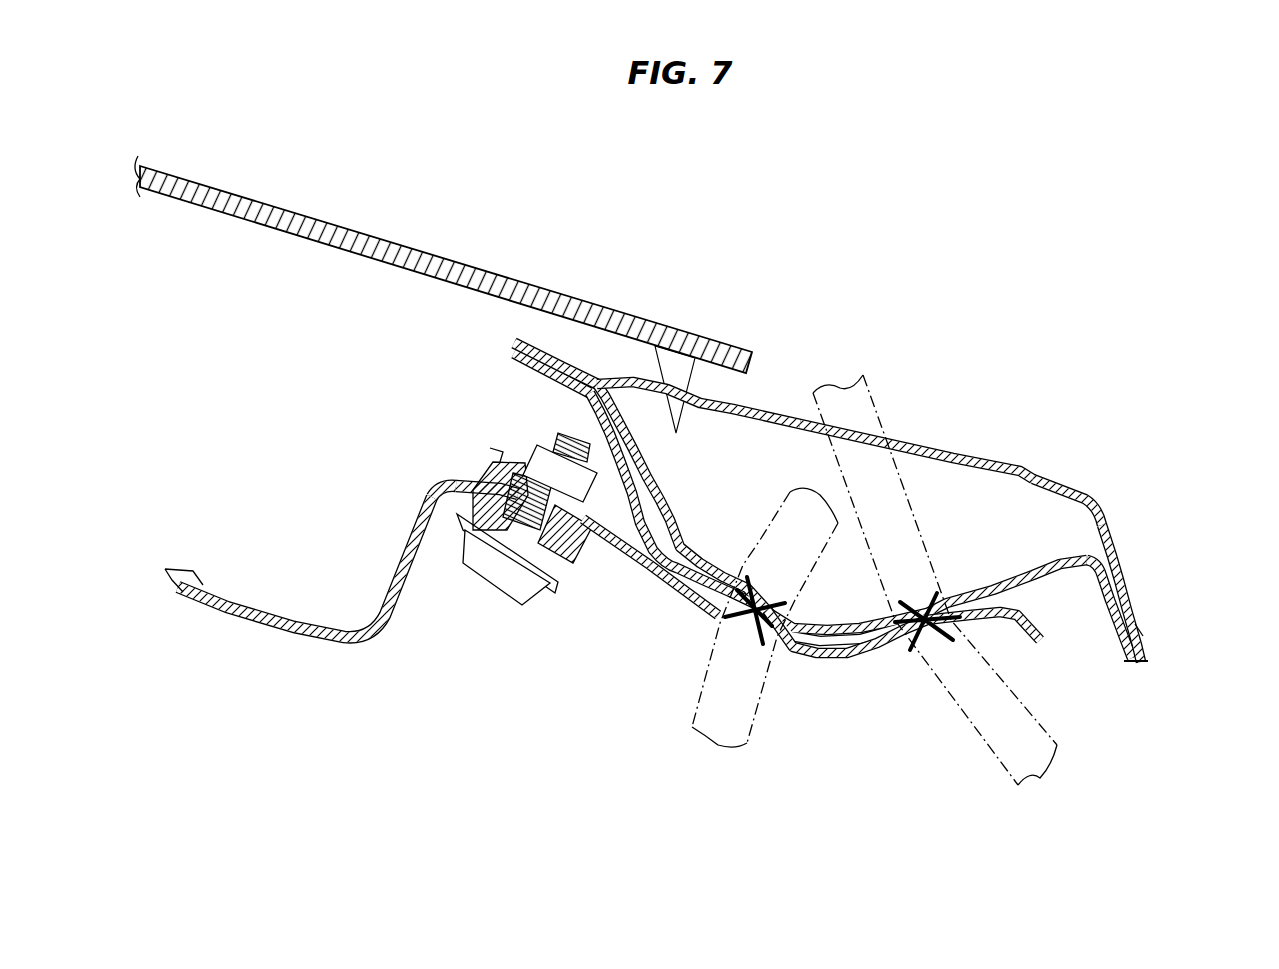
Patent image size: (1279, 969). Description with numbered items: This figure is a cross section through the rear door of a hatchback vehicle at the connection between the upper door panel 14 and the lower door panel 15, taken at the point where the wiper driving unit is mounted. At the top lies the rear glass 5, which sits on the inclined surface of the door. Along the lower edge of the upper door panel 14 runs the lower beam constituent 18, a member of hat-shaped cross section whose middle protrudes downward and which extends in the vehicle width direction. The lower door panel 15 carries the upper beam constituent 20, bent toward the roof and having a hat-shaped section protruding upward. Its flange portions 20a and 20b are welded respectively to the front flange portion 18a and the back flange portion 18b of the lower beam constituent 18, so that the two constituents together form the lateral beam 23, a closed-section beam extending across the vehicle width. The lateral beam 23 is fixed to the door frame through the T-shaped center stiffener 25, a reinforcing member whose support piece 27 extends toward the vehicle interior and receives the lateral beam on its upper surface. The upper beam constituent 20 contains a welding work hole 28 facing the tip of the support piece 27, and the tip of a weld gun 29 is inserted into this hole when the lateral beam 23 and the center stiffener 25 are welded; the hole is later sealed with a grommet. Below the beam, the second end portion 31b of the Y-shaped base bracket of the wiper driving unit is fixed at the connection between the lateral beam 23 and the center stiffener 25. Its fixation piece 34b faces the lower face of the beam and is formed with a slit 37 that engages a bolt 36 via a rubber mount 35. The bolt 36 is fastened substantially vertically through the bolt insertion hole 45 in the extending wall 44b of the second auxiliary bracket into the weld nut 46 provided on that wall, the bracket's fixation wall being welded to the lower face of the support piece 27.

The rear glass 5 is at (440, 258).
The upper door panel 14 is at (1122, 675).
The lower door panel 15 is at (1160, 630).
The lower beam constituent 18 is at (1037, 590).
The front flange portion 18a is at (556, 362).
The back flange portion 18b is at (1107, 610).
The upper beam constituent 20 is at (1058, 478).
The flange portion 20a is at (560, 340).
The flange portion 20b is at (1128, 605).
The lateral beam 23 is at (1094, 484).
The center stiffener 25 is at (815, 672).
The support piece 27 is at (670, 590).
The welding work hole 28 is at (950, 452).
The weld gun 29 is at (790, 493).
The second end portion 31b is at (405, 548).
The fixation piece 34b is at (446, 497).
The rubber mount 35 is at (557, 573).
The bolt 36 is at (497, 577).
The slit 37 is at (478, 565).
The extending wall 44b is at (600, 535).
The bolt insertion hole 45 is at (497, 478).
The weld nut 46 is at (537, 453).